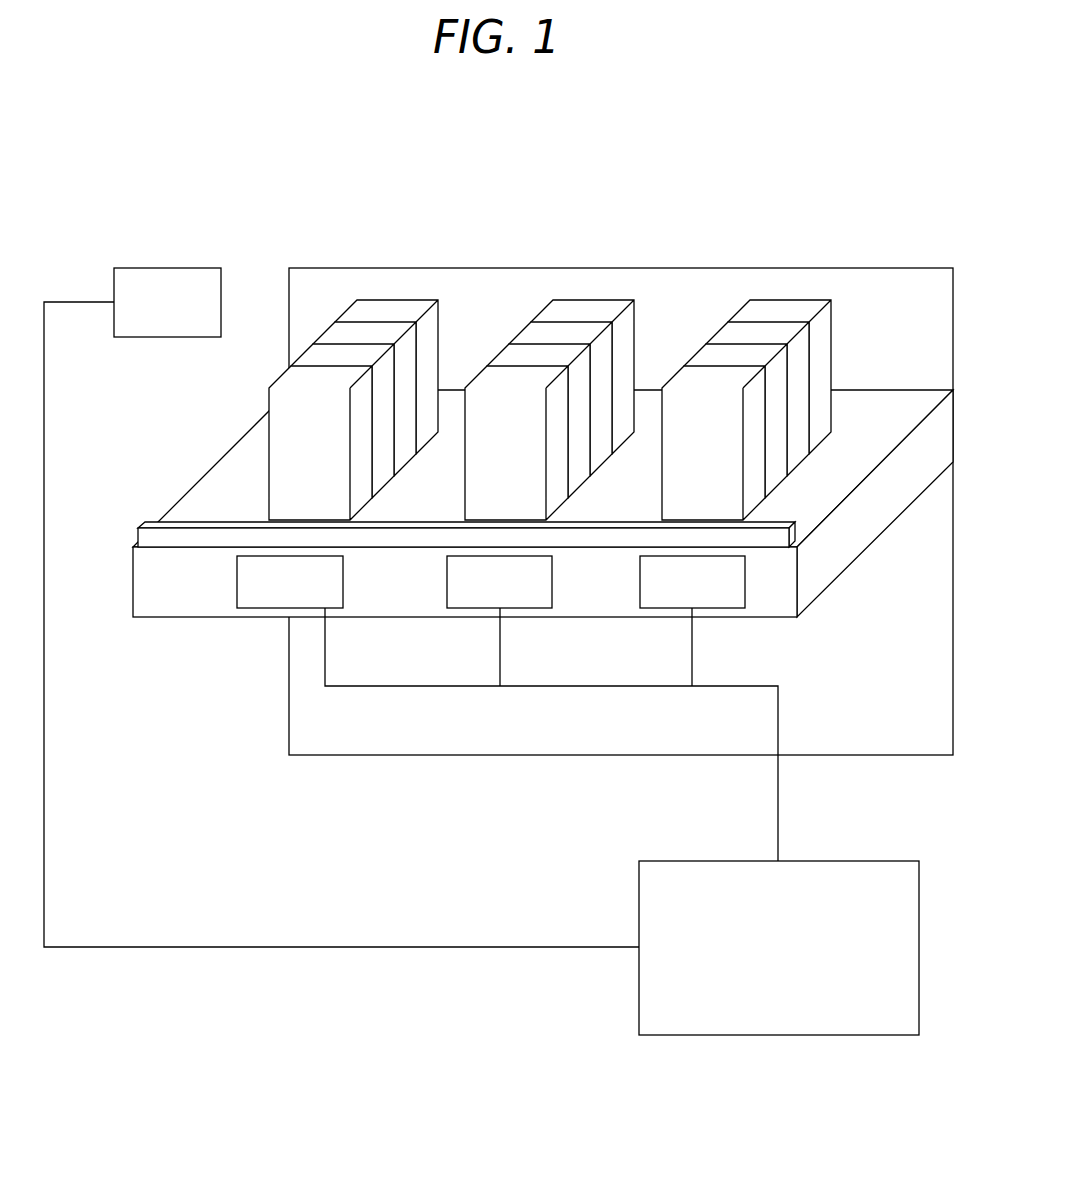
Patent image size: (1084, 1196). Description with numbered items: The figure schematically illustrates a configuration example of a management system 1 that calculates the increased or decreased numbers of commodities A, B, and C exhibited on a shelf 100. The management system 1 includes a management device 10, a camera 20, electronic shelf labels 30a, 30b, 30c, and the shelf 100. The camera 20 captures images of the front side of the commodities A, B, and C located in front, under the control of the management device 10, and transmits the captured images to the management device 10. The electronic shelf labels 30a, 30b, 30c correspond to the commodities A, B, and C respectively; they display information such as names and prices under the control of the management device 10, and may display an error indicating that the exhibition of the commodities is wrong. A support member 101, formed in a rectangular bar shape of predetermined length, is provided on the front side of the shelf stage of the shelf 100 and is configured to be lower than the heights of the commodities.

The management system 1 is at (553, 161).
The management device 10 is at (639, 1013).
The camera 20 is at (170, 268).
The shelf 100 is at (320, 268).
The support member 101 is at (182, 522).
The electronic shelf label 30a is at (237, 588).
The electronic shelf label 30b is at (447, 588).
The electronic shelf label 30c is at (640, 588).